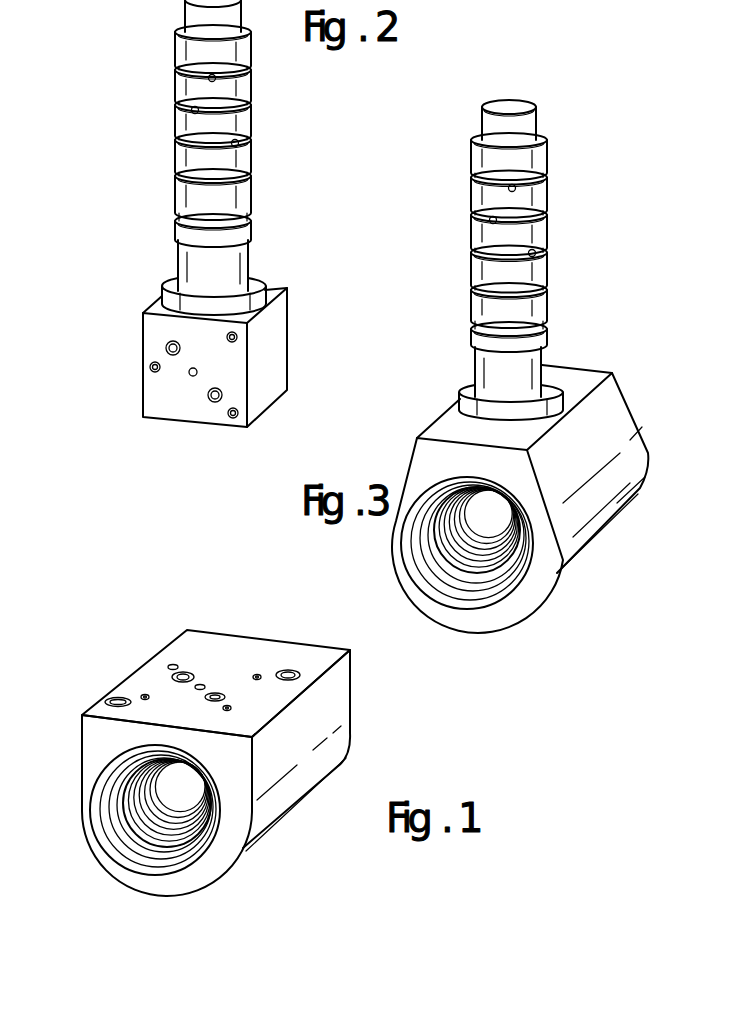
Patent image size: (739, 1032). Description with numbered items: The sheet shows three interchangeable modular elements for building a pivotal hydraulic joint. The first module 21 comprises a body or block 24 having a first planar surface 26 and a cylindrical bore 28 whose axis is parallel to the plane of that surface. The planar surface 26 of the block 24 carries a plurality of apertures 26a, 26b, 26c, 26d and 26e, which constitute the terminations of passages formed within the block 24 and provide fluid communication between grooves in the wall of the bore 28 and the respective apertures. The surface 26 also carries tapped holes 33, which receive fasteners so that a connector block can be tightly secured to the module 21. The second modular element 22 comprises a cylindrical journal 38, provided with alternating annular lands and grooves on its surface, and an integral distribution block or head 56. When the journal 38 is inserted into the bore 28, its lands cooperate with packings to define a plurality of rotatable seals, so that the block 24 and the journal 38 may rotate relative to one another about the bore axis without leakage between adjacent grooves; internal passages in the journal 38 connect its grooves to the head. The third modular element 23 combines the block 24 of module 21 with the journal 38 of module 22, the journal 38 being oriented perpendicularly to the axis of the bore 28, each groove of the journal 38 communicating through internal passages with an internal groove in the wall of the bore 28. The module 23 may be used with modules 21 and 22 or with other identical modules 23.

In FIG. 1, the first interchangeable element or module 21 is at (135, 600).
In FIG. 2, the second modular element 22 is at (274, 207).
In FIG. 3, the third modular element 23 is at (575, 351).
In FIG. 3, the body or block 24 is at (547, 560).
In FIG. 1, the body or block 24 is at (88, 812).
In FIG. 1, the first planar surface 26 is at (130, 682).
In FIG. 1, the aperture 26a is at (290, 673).
In FIG. 1, the aperture 26b is at (183, 673).
In FIG. 1, the aperture 26c is at (223, 697).
In FIG. 1, the aperture 26d is at (113, 702).
In FIG. 1, the aperture 26e is at (202, 687).
In FIG. 3, the cylindrical bore 28 is at (512, 562).
In FIG. 1, the cylindrical bore 28 is at (132, 775).
In FIG. 1, the tapped holes 33 is at (173, 665).
In FIG. 2, the journal 38 is at (182, 122).
In FIG. 3, the journal 38 is at (548, 162).
In FIG. 2, the integral distribution block or head 56 is at (290, 325).